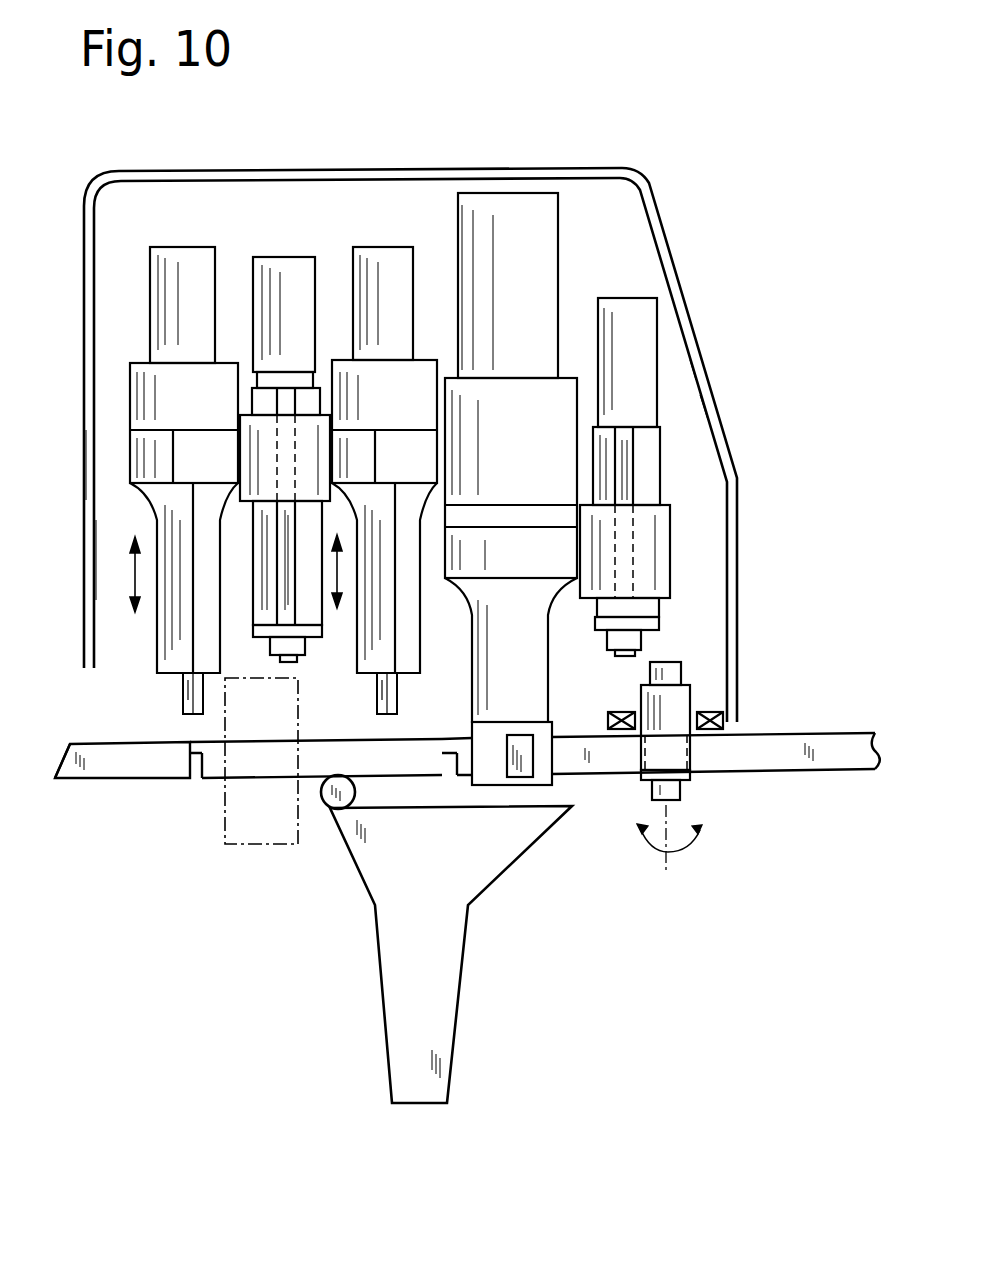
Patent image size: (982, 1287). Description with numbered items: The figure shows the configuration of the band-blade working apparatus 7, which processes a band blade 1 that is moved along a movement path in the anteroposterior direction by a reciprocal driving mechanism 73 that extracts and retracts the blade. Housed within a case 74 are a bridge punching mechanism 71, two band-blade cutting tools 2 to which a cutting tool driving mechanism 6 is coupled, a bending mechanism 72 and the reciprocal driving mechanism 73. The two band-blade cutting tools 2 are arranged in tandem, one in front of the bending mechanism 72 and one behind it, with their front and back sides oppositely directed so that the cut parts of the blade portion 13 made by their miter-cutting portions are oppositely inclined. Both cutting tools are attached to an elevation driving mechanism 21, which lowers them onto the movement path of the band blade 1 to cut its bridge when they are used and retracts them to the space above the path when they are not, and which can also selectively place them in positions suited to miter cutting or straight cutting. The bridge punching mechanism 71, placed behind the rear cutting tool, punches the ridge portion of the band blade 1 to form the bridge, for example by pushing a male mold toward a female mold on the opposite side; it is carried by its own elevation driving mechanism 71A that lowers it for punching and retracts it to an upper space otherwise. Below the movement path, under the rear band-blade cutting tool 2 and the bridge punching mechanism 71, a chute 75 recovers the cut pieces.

The band blade 1 is at (834, 734).
The band-blade cutting tool 2 is at (181, 696).
The cutting tool driving mechanism 6 is at (172, 245).
The band-blade working apparatus 7 is at (429, 410).
The blade portion 13 is at (96, 744).
The elevation driving mechanism 21 is at (305, 246).
The bridge punching mechanism 71 is at (553, 753).
The elevation driving mechanism 71A is at (662, 381).
The bending mechanism 72 is at (222, 836).
The reciprocal driving mechanism 73 is at (700, 672).
The case 74 is at (672, 240).
The chute 75 is at (512, 870).